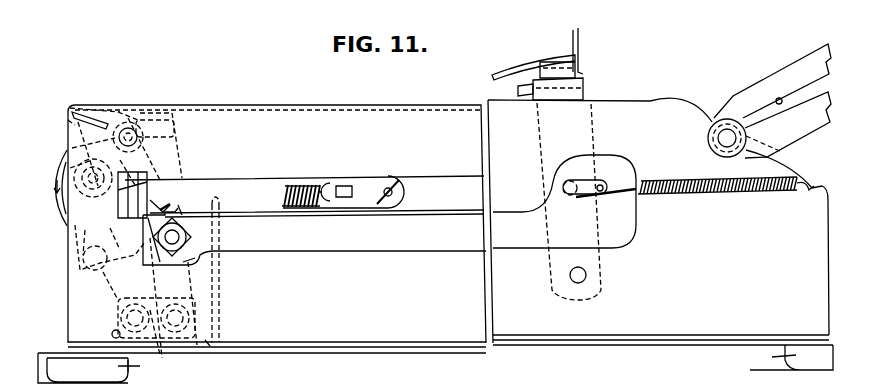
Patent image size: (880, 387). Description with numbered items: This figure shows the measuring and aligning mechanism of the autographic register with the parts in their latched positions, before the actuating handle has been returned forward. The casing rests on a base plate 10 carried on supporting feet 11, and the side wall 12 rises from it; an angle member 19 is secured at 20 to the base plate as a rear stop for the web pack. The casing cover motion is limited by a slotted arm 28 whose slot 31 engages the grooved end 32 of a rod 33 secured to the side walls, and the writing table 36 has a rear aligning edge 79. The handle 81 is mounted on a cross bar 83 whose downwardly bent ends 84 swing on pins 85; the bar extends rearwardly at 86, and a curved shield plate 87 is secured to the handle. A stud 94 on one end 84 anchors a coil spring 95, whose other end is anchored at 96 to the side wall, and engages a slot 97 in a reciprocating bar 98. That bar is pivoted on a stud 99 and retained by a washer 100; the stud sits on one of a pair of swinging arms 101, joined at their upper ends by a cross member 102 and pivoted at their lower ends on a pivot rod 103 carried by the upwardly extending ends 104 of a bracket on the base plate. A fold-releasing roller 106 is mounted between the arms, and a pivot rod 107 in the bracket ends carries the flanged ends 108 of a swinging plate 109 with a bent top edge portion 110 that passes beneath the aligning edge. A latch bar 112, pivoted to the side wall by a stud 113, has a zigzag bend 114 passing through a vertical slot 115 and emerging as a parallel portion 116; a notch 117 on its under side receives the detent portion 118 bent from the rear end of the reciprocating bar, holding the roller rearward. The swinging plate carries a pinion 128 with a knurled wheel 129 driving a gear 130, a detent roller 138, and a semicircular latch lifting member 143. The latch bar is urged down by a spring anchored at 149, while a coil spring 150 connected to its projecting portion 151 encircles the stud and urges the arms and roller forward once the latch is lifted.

The base plate 10 is at (321, 352).
The supporting feet 11 is at (138, 367).
The side wall 12 is at (448, 288).
The angle member 19 is at (221, 292).
The securing point of angle member 20 is at (213, 352).
The slotted arm 28 is at (772, 78).
The slot 31 is at (778, 101).
The grooved end 32 is at (708, 130).
The rod 33 is at (713, 142).
The writing table 36 is at (357, 110).
The rear edge of writing table 79 is at (130, 112).
The handle 81 is at (579, 30).
The cross bar 83 is at (580, 76).
The downwardly bent end 84 is at (580, 94).
The pin 85 is at (587, 275).
The rearward extension of cross bar 86 is at (518, 90).
The shield plate 87 is at (516, 70).
The stud 94 is at (574, 181).
The coil spring 95 is at (748, 192).
The spring anchorage 96 is at (812, 192).
The slot 97 is at (603, 184).
The reciprocating bar 98 is at (450, 224).
The stud 99 is at (186, 239).
The washer 100 is at (185, 230).
The swinging arm 101 is at (197, 260).
The cross member 102 is at (164, 113).
The pivot rod 103 is at (185, 316).
The upwardly extending end of bracket 104 is at (200, 340).
The fold-releasing roller 106 is at (166, 134).
The pivot rod 107 is at (158, 348).
The flanged end 108 is at (70, 124).
The swinging plate 109 is at (70, 110).
The bent top edge portion 110 is at (100, 113).
The latch bar 112 is at (264, 188).
The stud 113 is at (396, 188).
The zigzag bent portion 114 is at (147, 185).
The vertical slot 115 is at (134, 172).
The parallel portion of latch bar 116 is at (62, 220).
The notch 117 is at (162, 211).
The detent portion 118 is at (182, 214).
The pinion 128 is at (66, 170).
The knurled wheel 129 is at (70, 158).
The gear 130 is at (110, 270).
The roller 138 is at (92, 272).
The latch lifting member 143 is at (112, 310).
The spring anchorage point 149 is at (112, 334).
The coil spring 150 is at (305, 185).
The projecting portion 151 is at (346, 186).